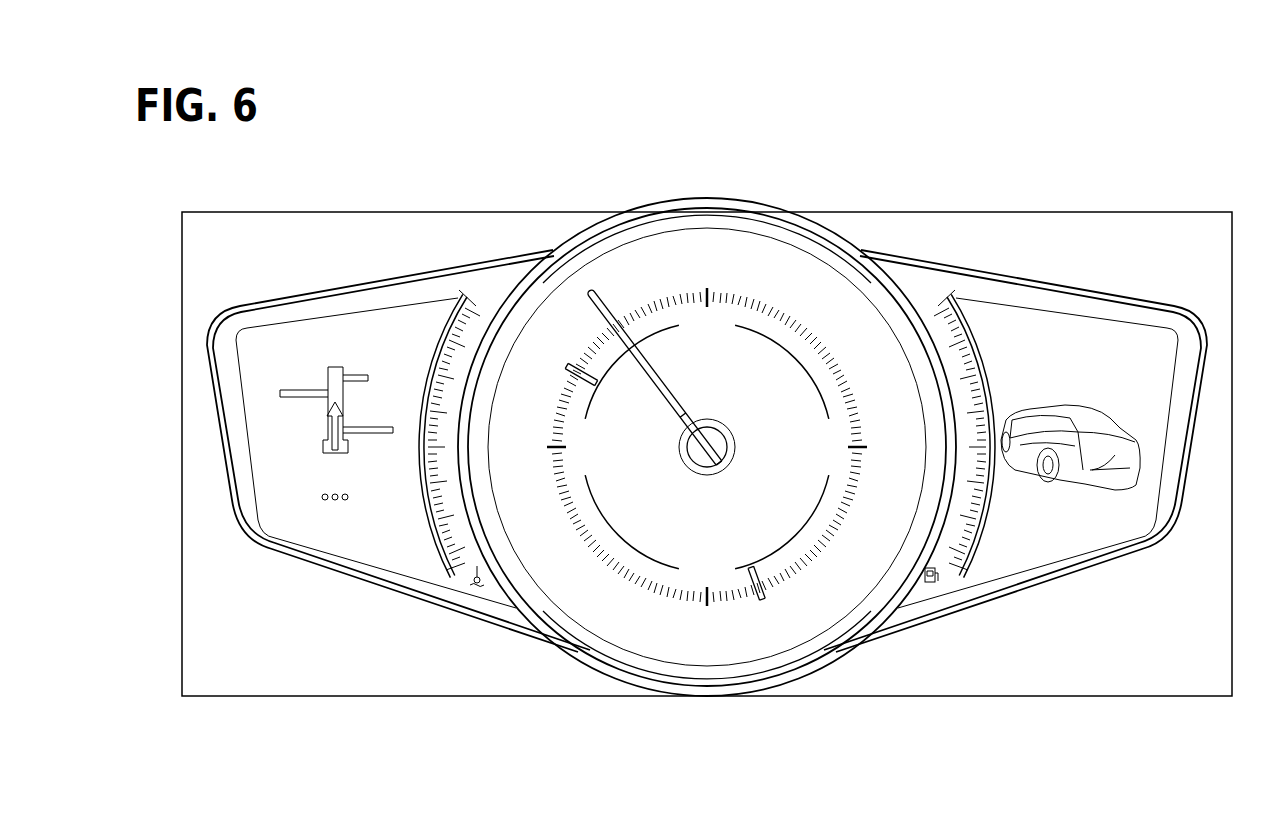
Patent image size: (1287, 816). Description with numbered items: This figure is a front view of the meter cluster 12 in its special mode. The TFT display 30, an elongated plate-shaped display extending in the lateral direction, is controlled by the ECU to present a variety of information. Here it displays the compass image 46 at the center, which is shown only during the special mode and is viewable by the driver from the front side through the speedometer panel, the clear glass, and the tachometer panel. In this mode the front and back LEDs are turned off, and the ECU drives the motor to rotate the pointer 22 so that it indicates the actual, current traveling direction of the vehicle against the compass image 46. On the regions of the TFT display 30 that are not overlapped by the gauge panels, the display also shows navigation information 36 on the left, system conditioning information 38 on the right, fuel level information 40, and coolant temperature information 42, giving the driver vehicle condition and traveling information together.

The meter cluster 12 is at (946, 168).
The pointer 22 is at (650, 362).
The TFT display 30 is at (755, 517).
The navigation information 36 is at (298, 395).
The system conditioning information 38 is at (1112, 440).
The fuel level information 40 is at (972, 540).
The coolant temperature information 42 is at (450, 538).
The compass image 46 is at (697, 574).